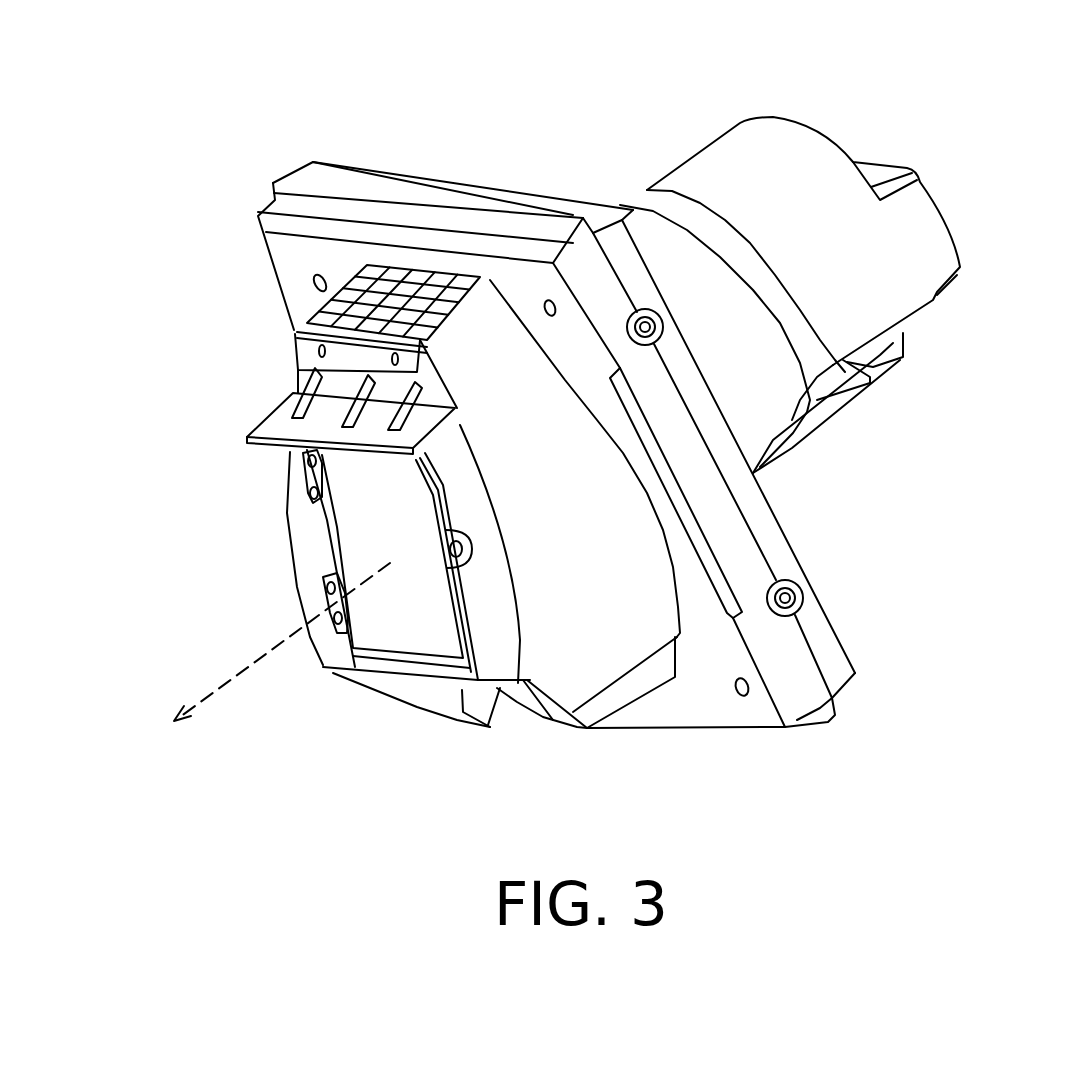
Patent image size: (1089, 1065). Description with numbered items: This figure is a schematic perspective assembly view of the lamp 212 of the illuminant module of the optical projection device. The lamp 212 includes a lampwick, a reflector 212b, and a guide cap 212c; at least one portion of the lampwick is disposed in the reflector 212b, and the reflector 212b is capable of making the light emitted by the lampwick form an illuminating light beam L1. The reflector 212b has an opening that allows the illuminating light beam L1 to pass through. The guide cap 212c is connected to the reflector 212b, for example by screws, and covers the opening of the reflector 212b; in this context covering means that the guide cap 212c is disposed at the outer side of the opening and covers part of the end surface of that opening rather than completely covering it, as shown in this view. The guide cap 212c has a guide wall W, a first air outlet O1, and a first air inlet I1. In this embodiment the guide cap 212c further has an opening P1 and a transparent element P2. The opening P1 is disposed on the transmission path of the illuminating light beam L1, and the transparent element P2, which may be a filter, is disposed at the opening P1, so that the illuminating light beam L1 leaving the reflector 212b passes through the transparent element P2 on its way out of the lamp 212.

The lamp 212 is at (1072, 776).
The reflector 212b is at (617, 238).
The guide cap 212c is at (330, 72).
The first air inlet I1 is at (329, 409).
The opening P1 is at (371, 495).
The transparent element P2 is at (323, 380).
The first air outlet O1 is at (350, 315).
The guide wall W is at (506, 358).
The illuminating light beam L1 is at (250, 667).